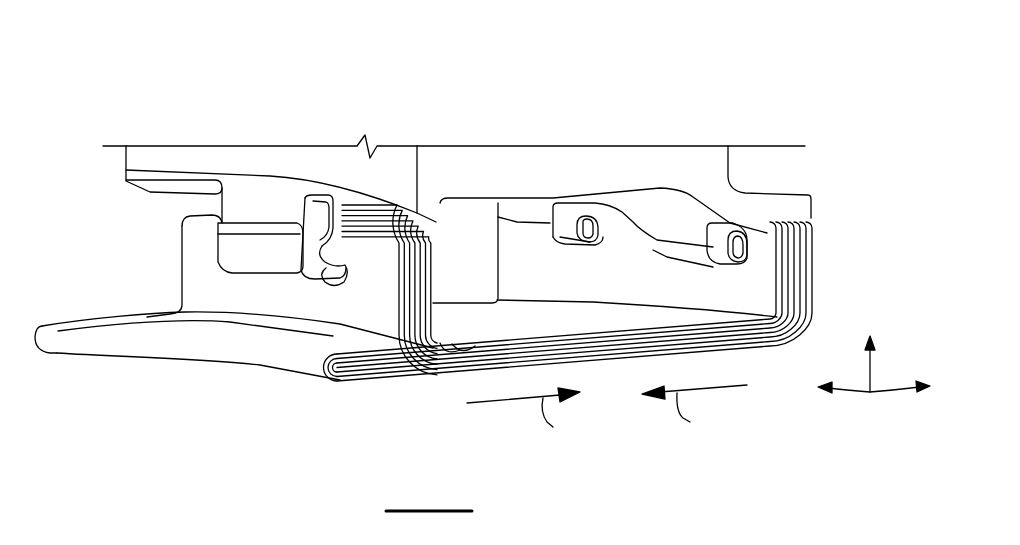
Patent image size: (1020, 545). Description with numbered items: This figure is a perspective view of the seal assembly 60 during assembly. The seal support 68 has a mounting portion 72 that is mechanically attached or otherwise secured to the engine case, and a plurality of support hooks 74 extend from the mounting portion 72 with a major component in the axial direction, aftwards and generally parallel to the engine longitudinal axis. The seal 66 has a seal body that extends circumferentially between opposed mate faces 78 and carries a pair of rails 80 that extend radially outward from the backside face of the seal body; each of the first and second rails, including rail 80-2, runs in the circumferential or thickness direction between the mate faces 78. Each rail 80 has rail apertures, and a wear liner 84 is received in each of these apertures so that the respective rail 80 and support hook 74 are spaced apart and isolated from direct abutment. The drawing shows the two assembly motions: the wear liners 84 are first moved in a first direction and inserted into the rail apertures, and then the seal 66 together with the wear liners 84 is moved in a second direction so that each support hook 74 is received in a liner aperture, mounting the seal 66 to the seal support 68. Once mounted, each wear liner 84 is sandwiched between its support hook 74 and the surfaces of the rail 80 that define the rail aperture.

The seal assembly 60 is at (158, 86).
The seal 66 is at (77, 357).
The seal support 68 is at (476, 143).
The mounting portion 72 is at (538, 168).
The support hook 74 is at (301, 270).
The mate face 78 is at (750, 348).
The rail 80 is at (185, 256).
The second rail 80-2 is at (619, 325).
The wear liner 84 is at (342, 275).